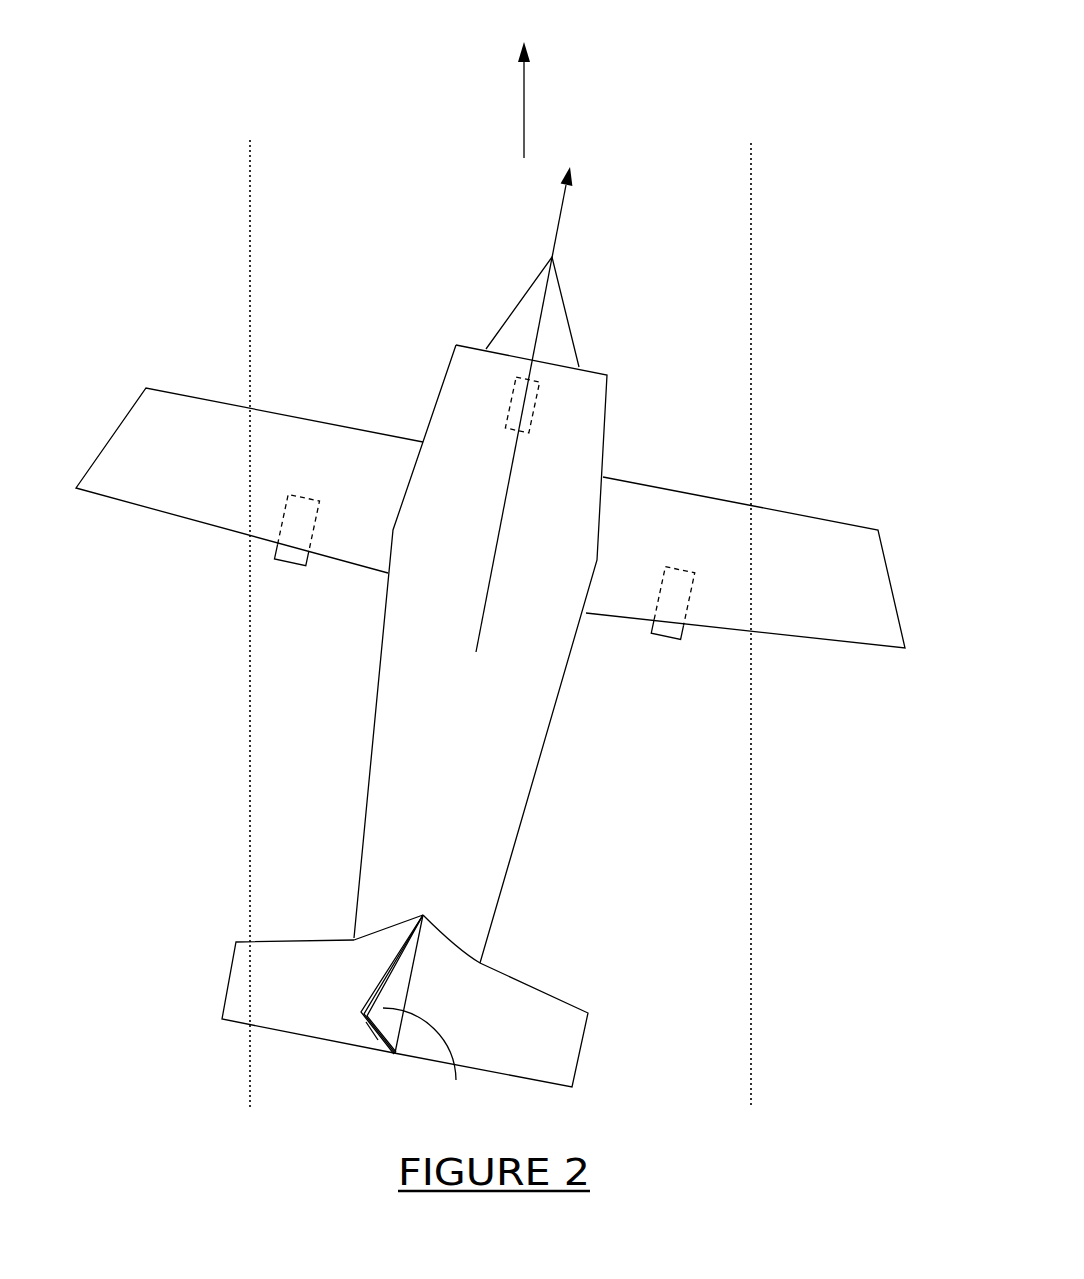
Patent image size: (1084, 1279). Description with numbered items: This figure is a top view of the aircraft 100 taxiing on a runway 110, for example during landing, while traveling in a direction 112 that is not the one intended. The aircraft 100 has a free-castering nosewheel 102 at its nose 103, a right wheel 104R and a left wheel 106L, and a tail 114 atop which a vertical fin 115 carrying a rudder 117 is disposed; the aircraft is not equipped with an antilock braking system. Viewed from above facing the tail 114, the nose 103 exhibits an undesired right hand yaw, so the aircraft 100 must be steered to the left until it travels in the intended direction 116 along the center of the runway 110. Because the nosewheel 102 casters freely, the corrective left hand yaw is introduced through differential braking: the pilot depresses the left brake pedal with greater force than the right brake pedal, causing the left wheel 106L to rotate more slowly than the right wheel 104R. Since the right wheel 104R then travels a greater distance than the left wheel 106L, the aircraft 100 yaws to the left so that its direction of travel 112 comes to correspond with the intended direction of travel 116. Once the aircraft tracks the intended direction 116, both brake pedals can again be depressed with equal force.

The aircraft 100 is at (398, 395).
The free-castering nosewheel 102 is at (537, 395).
The nose 103 is at (444, 267).
The right wheel 104R is at (658, 636).
The left wheel 106L is at (291, 565).
The runway 110 is at (757, 230).
The direction of travel 112 is at (539, 396).
The tail 114 is at (563, 1057).
The vertical fin 115 is at (431, 1056).
The intended direction of travel 116 is at (525, 83).
The rudder 117 is at (375, 1040).